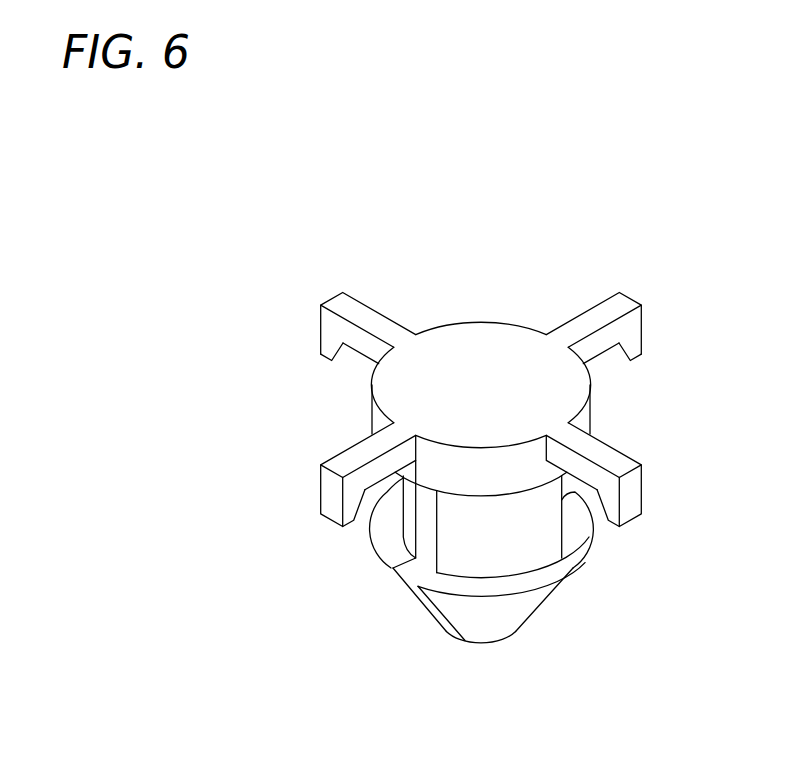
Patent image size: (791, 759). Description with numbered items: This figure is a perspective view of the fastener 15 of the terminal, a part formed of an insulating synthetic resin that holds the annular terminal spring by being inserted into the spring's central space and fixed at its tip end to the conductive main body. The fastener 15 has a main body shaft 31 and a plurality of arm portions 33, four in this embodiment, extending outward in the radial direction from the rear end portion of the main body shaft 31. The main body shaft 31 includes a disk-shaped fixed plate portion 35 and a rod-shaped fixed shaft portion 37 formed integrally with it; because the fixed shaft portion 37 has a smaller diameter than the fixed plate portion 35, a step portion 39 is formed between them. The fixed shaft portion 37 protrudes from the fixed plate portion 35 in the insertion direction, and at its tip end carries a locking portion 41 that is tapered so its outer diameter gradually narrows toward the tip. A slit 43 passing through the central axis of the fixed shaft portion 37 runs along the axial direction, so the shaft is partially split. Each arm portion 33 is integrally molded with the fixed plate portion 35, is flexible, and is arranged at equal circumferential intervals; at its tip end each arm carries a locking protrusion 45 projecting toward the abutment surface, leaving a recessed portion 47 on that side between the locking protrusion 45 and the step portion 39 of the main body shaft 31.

The fastener 15 is at (484, 280).
The main body shaft 31 is at (443, 345).
The arm portions 33 is at (350, 300).
The fixed plate portion 35 is at (592, 420).
The fixed shaft portion 37 is at (557, 535).
The step portion 39 is at (497, 497).
The locking portion 41 is at (533, 603).
The slit 43 is at (411, 574).
The locking protrusion 45 is at (320, 360).
The recessed portion 47 is at (365, 358).